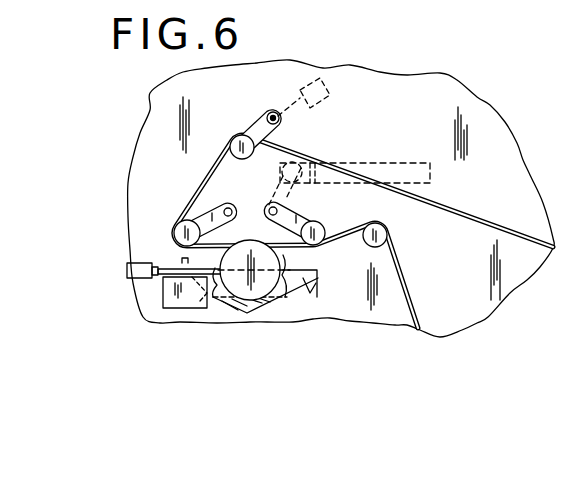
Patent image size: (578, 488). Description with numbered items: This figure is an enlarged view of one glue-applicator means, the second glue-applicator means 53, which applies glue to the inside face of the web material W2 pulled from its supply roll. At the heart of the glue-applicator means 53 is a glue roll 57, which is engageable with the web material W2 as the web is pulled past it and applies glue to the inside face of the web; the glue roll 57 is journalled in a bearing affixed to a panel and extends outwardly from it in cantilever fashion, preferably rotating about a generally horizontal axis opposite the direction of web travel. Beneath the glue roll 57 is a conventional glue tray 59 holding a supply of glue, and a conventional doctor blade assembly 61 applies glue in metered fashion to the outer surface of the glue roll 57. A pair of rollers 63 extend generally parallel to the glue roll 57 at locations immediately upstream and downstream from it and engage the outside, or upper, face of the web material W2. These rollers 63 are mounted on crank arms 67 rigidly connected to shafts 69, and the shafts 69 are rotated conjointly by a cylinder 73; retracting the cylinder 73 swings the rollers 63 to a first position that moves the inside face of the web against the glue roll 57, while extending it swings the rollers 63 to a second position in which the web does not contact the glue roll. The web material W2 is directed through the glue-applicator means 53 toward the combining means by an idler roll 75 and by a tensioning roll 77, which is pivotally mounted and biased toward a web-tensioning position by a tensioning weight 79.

The second glue-applicator means 53 is at (463, 74).
The glue roll 57 is at (282, 257).
The glue tray 59 is at (317, 297).
The doctor blade assembly 61 is at (180, 262).
The rollers 63 is at (181, 229).
The crank arms 67 is at (211, 208).
The shafts 69 is at (270, 208).
The cylinder 73 is at (370, 161).
The idler rolls 75 is at (388, 229).
The tensioning roll 77 is at (237, 134).
The tensioning weight 79 is at (330, 90).
The web material W2 is at (418, 315).